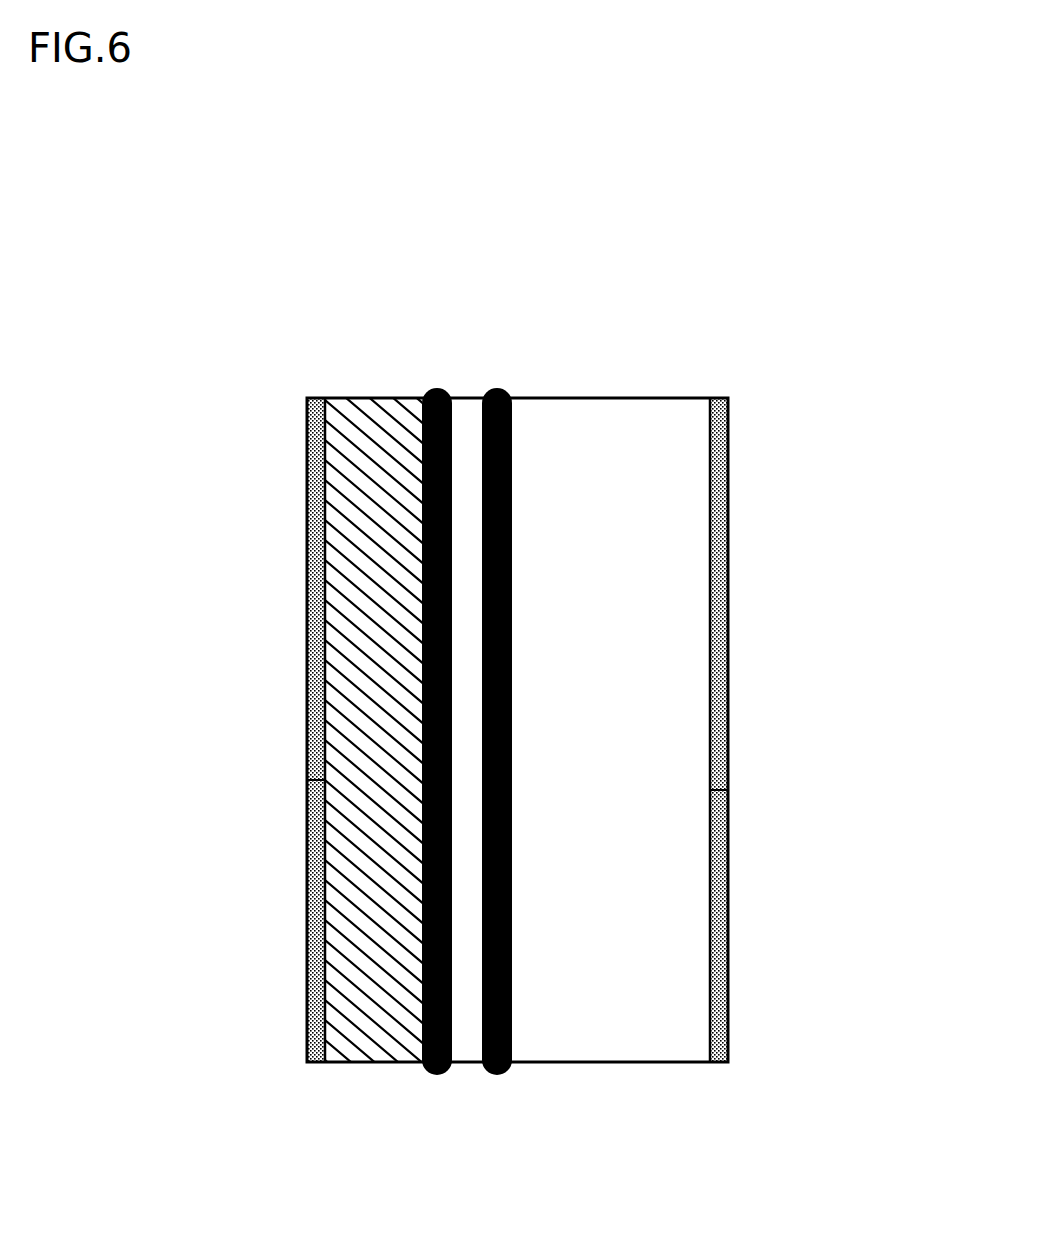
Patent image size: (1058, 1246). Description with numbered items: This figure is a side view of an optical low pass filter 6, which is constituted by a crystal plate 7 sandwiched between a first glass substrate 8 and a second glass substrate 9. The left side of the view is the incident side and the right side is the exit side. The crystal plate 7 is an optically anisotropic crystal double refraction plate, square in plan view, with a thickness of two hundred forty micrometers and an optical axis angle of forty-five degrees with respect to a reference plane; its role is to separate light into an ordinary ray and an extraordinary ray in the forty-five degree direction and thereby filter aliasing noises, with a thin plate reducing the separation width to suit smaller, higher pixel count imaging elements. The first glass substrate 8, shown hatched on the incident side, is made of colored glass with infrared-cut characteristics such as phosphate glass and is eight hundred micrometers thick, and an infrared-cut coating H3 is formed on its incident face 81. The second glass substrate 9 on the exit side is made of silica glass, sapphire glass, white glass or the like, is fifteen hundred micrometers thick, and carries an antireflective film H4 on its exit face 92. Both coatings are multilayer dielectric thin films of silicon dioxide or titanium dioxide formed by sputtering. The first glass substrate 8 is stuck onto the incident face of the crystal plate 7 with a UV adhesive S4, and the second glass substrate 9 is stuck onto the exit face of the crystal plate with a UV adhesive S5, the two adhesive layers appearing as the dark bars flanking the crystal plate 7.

The optical low pass filter 6 is at (763, 473).
The crystal plate 7 is at (467, 1022).
The first glass substrate 8 is at (373, 1027).
The second glass substrate 9 is at (605, 1022).
The incident face 81 is at (317, 586).
The exit face 92 is at (718, 620).
The infrared-cut coating H3 is at (320, 780).
The antireflective film H4 is at (712, 790).
The UV adhesive S4 is at (437, 387).
The UV adhesive S5 is at (494, 386).